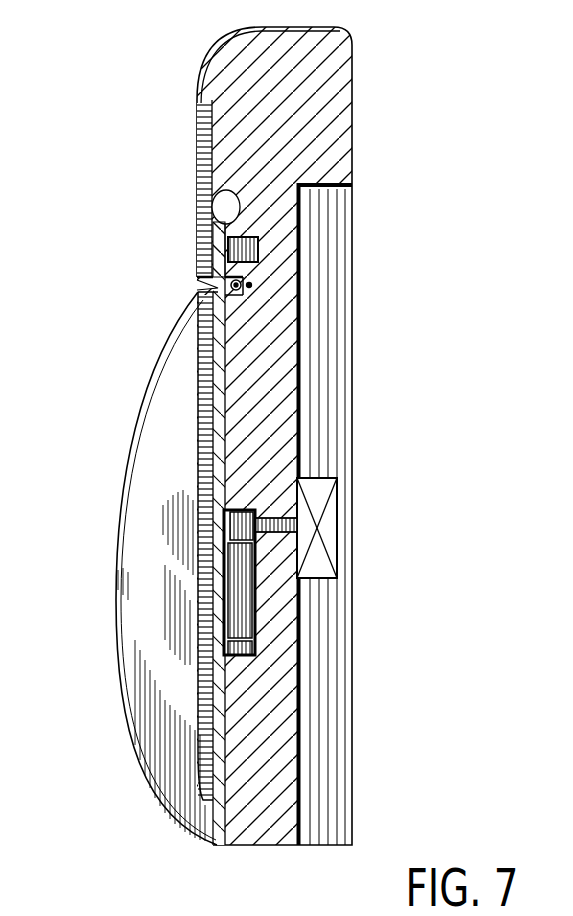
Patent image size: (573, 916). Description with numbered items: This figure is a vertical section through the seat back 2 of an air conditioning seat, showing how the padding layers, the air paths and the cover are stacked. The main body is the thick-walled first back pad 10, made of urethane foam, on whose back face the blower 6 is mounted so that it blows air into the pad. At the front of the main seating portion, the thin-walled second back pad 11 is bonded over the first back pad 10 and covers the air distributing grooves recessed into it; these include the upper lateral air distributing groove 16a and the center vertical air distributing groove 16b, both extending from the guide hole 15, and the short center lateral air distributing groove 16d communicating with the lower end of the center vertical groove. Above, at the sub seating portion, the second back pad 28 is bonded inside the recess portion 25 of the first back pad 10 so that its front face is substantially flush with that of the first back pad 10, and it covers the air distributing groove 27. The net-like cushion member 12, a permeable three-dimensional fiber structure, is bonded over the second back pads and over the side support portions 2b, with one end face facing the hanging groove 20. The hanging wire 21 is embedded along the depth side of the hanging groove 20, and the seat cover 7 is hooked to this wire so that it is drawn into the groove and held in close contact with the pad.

The seat back 2 is at (365, 48).
The side support portion 2b is at (150, 595).
The blower 6 is at (322, 512).
The seat cover 7 is at (205, 82).
The first back pad 10 is at (340, 120).
The second back pad 11 is at (207, 470).
The net-like cushion member 12 is at (200, 165).
The guide hole 15 is at (268, 530).
The upper lateral air distributing groove 16a is at (232, 520).
The center vertical air distributing groove 16b is at (235, 595).
The center lateral air distributing groove 16d is at (232, 650).
The hanging groove 20 is at (200, 287).
The hanging wire 21 is at (252, 287).
The recess portion 25 is at (235, 190).
The air distributing groove 27 is at (220, 268).
The second back pad 28 is at (218, 242).